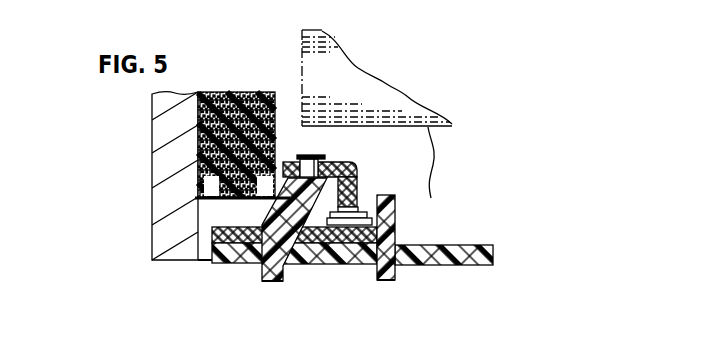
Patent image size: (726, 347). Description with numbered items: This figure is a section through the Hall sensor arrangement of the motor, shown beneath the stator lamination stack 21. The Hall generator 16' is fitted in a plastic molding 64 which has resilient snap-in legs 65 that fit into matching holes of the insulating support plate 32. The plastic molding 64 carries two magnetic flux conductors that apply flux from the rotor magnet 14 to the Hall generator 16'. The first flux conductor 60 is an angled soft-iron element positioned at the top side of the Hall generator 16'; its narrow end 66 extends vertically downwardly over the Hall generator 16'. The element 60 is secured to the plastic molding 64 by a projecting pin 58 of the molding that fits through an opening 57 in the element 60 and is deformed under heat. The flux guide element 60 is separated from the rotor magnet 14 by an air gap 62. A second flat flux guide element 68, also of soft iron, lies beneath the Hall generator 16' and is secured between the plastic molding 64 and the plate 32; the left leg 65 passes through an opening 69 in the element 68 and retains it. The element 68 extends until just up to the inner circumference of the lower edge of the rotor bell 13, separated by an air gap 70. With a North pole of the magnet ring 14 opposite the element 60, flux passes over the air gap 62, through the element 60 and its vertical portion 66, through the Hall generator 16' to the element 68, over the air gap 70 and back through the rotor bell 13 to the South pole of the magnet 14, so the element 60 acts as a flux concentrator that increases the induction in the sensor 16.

The rotor bell 13 is at (162, 185).
The rotor magnet 14 is at (227, 91).
The sensor 16 is at (330, 279).
The Hall generator 16' is at (418, 177).
The stator lamination stack 21 is at (367, 89).
The insulating support plate 32 is at (480, 266).
The opening 57 is at (293, 160).
The projecting pin 58 is at (312, 158).
The first flux conductor 60 is at (340, 165).
The air gap 62 is at (282, 160).
The plastic molding 64 is at (288, 207).
The resilient snap-in legs 65 is at (265, 283).
The narrow end 66 is at (352, 190).
The second flat flux guide element 68 is at (218, 265).
The opening 69 is at (245, 263).
The air gap 70 is at (204, 236).